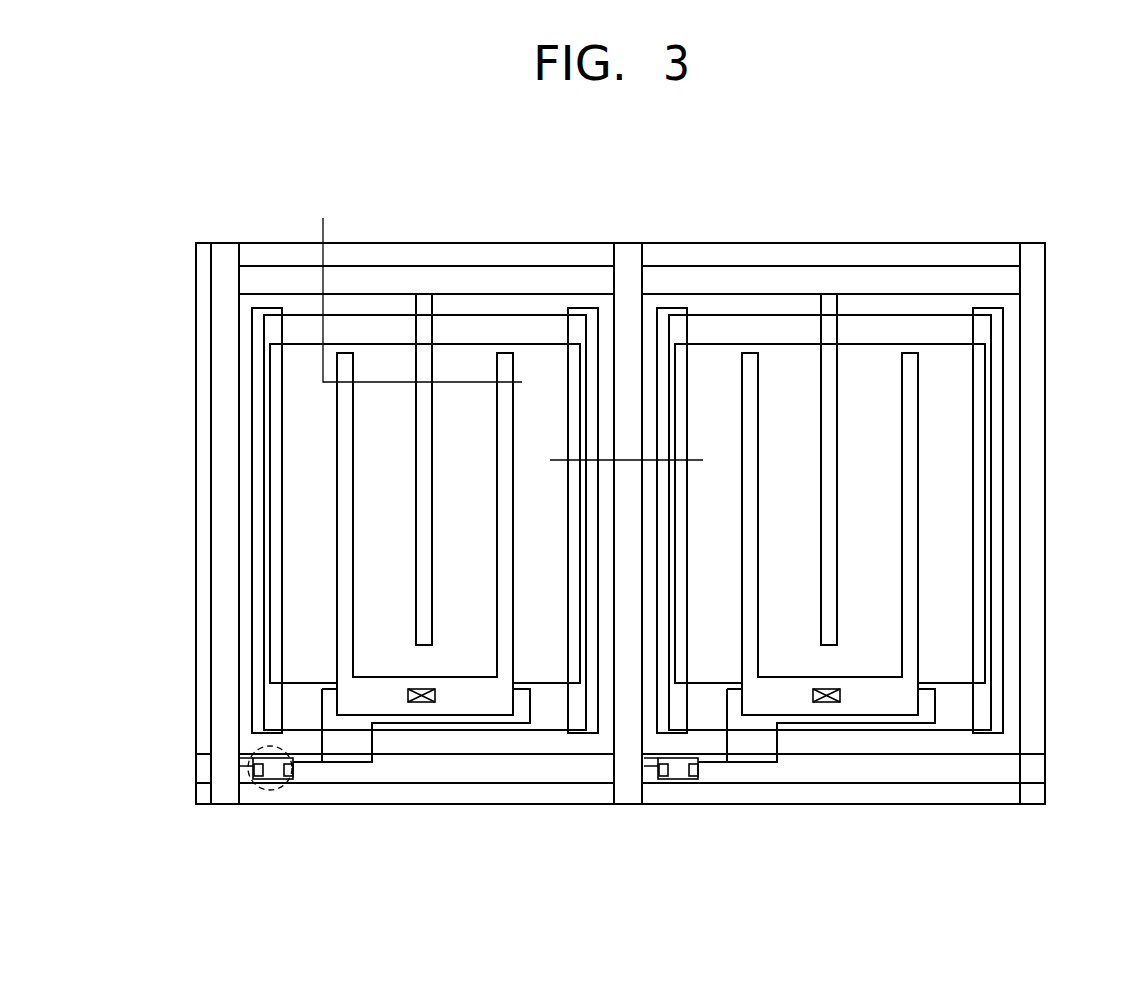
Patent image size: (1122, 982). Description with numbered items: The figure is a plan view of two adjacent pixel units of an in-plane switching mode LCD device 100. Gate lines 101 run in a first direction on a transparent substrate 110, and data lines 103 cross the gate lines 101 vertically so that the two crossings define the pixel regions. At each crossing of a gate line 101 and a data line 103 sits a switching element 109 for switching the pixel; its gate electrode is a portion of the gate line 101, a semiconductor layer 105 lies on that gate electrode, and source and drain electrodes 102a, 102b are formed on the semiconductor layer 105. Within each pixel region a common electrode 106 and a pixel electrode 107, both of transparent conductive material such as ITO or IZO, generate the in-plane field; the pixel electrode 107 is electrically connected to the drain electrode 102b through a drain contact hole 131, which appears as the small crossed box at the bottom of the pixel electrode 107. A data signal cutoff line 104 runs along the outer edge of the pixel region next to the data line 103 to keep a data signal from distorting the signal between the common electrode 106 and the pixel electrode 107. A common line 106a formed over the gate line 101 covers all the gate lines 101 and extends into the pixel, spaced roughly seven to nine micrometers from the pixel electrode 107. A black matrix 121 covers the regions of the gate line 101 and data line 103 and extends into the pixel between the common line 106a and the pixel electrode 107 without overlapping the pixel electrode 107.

The array substrate 100 is at (189, 278).
The gate line 101 is at (485, 790).
The source electrode 102a is at (261, 781).
The drain electrode 102b is at (291, 781).
The data line 103 is at (224, 792).
The data signal cutoff line 104 is at (279, 340).
The semiconductor layer 105 is at (271, 782).
The common electrode 106 is at (426, 360).
The common line 106a is at (460, 327).
The pixel electrode 107 is at (346, 362).
The switching element 109 is at (243, 747).
The transparent substrate 110 is at (540, 243).
The black matrix 121 is at (399, 328).
The drain contact hole 131 is at (421, 704).